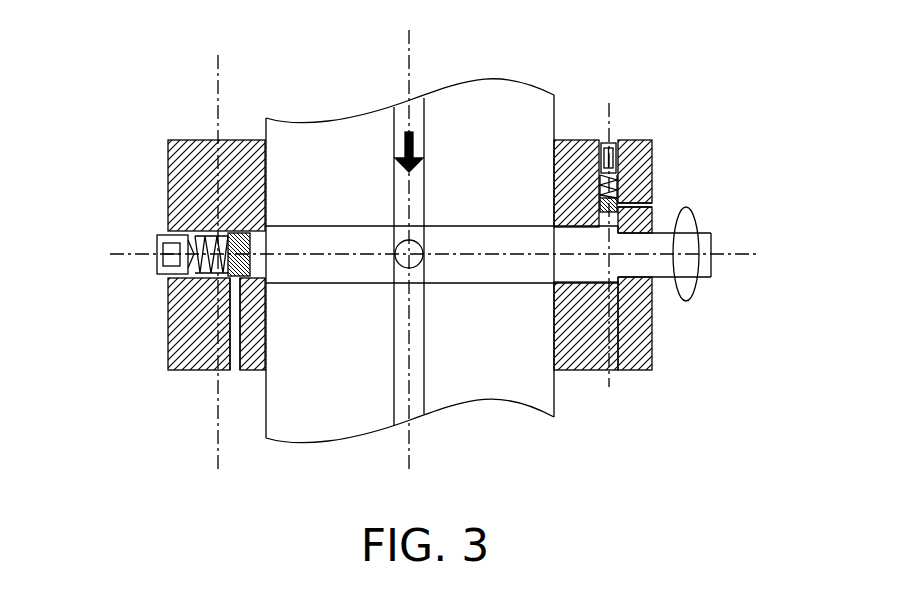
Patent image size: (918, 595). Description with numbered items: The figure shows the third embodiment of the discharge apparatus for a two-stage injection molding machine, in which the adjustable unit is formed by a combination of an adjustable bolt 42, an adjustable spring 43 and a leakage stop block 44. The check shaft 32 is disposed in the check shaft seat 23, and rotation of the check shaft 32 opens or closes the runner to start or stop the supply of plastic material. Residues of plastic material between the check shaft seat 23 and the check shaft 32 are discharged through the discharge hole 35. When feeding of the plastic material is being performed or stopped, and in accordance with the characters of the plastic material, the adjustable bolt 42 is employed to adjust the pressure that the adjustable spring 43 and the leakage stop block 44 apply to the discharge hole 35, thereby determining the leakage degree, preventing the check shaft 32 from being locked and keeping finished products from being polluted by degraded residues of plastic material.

The check shaft seat 23 is at (483, 117).
The check shaft 32 is at (692, 263).
The discharge hole 35 is at (233, 356).
The adjustable bolt 42 is at (168, 232).
The adjustable spring 43 is at (178, 303).
The leakage stop block 44 is at (178, 335).